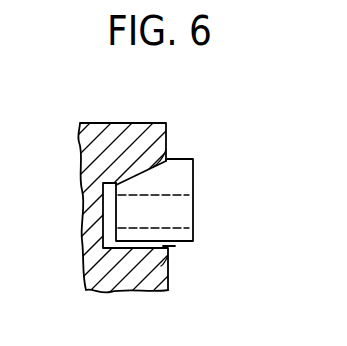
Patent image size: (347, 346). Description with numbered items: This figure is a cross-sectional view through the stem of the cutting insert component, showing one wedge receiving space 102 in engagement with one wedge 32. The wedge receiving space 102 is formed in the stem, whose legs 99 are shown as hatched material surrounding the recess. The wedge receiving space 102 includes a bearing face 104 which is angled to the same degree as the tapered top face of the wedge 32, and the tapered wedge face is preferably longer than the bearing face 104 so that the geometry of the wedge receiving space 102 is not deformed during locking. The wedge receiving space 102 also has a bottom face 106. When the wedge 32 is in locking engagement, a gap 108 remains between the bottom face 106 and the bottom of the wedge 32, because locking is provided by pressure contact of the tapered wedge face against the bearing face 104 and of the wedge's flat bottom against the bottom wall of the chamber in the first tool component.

The leg 99 is at (106, 132).
The bearing face 104 is at (168, 148).
The wedge 32 is at (193, 169).
The wedge receiving space 102 is at (103, 203).
The gap 108 is at (175, 246).
The bottom face 106 is at (170, 264).